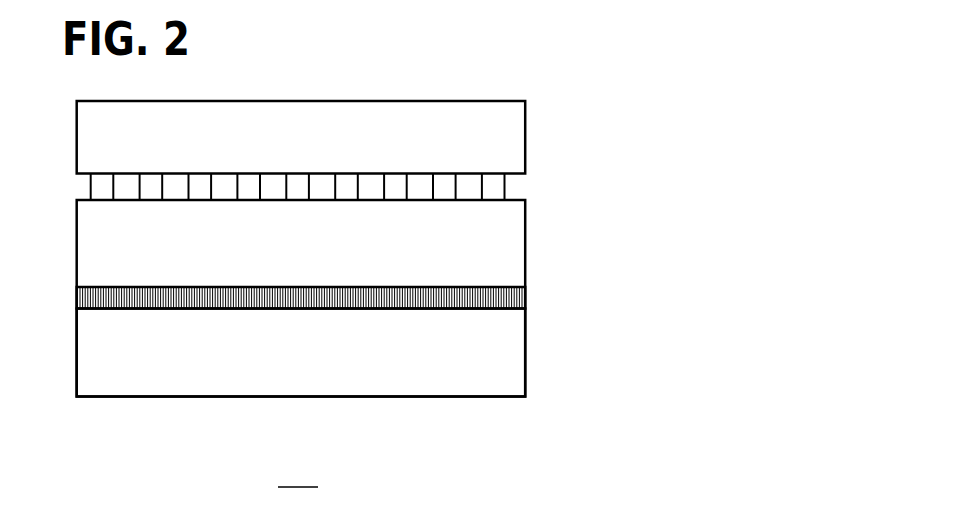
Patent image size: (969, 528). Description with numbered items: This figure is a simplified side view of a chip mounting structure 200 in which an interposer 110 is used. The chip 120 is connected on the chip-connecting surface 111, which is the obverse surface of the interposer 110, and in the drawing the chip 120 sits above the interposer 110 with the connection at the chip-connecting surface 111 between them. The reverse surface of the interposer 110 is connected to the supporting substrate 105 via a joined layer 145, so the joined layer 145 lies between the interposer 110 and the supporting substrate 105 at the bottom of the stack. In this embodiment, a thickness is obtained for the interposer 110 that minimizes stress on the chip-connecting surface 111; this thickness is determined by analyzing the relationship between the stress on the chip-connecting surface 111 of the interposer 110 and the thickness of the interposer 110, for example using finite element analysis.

The chip mounting structure 200 is at (298, 475).
The chip 120 is at (520, 122).
The chip-connecting surface 111 is at (515, 197).
The interposer 110 is at (525, 250).
The joined layer 145 is at (525, 297).
The supporting substrate 105 is at (525, 353).